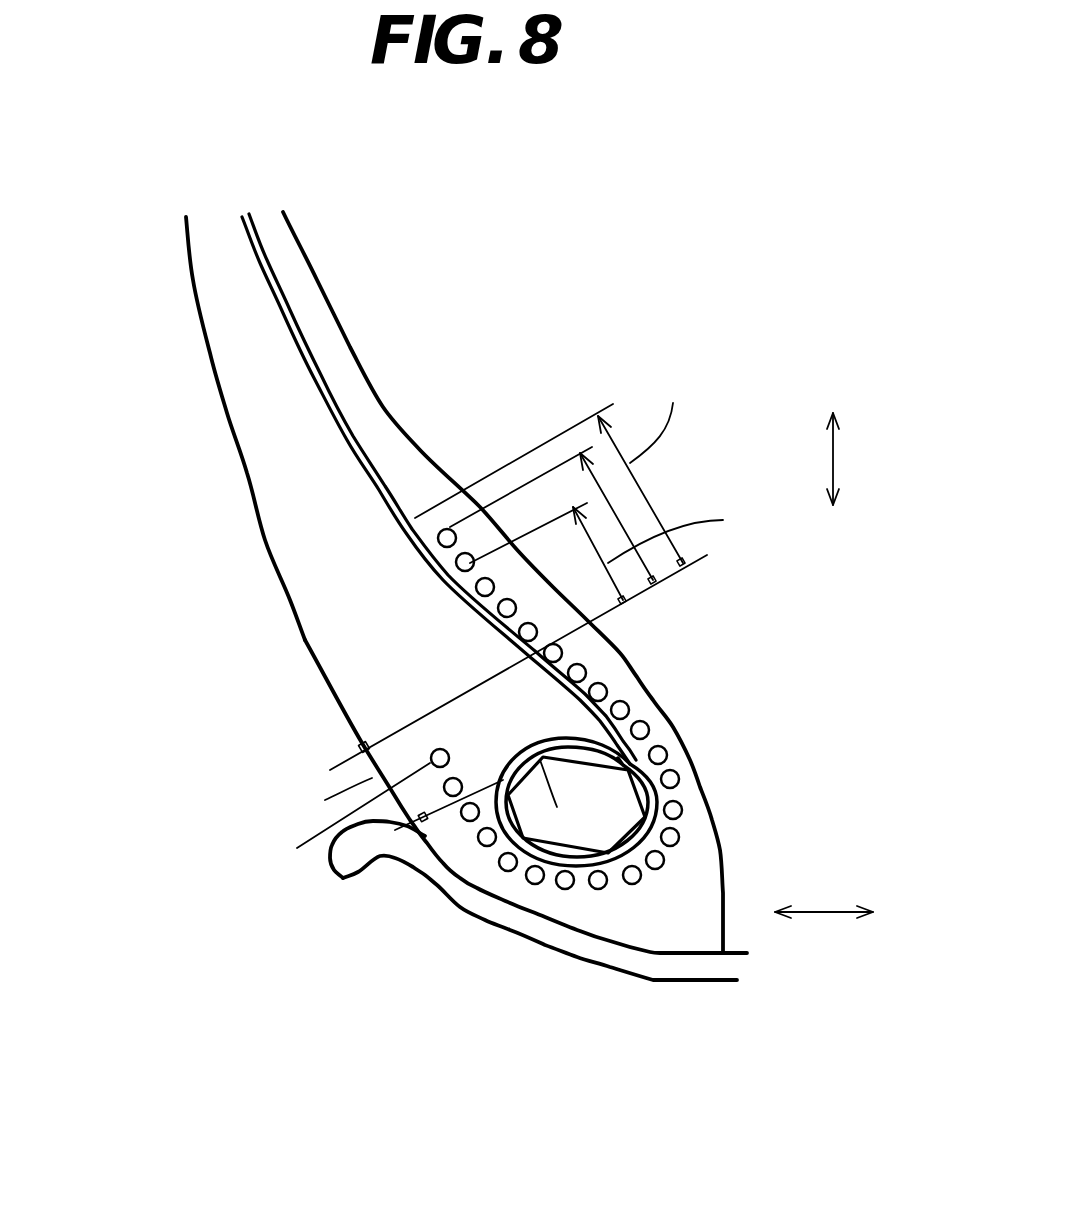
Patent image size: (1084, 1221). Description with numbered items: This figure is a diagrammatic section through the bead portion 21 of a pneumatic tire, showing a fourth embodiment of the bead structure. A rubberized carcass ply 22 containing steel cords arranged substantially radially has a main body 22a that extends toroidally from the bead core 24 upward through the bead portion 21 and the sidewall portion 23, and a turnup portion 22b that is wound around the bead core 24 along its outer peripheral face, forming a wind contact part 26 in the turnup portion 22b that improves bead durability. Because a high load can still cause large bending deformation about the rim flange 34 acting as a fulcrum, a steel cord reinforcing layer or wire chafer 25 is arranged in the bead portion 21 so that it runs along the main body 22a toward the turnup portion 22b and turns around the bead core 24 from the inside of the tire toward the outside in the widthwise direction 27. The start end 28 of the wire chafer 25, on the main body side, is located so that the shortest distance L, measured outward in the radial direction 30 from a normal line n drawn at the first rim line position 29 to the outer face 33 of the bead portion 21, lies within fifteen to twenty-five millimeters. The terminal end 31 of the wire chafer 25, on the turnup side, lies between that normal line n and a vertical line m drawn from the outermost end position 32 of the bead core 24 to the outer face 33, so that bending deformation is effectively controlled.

The bead portion 21 is at (343, 782).
The carcass ply 22 is at (363, 457).
The main body 22a is at (317, 380).
The turnup portion 22b is at (512, 871).
The sidewall portion 23 is at (208, 357).
The bead core 24 is at (605, 810).
The steel cord reinforcing layer or wire chafer 25 is at (628, 708).
The wind contact part 26 is at (586, 668).
The widthwise direction 27 is at (828, 908).
The start end 28 is at (443, 530).
The first rim line position 29 is at (355, 750).
The radial direction 30 is at (836, 458).
The terminal end 31 is at (378, 830).
The outermost end position 32 is at (557, 807).
The outer face 33 is at (297, 848).
The rim flange 34 is at (392, 847).
The shortest distance L is at (623, 517).
The vertical line m is at (447, 820).
The normal line n is at (417, 718).